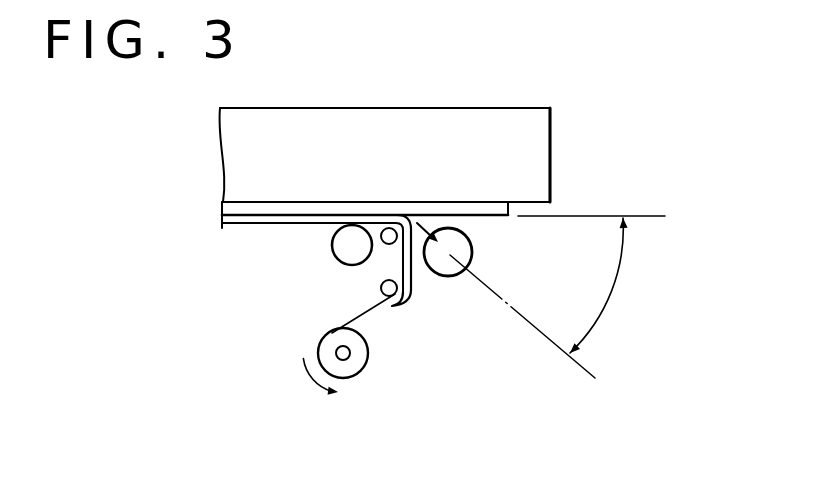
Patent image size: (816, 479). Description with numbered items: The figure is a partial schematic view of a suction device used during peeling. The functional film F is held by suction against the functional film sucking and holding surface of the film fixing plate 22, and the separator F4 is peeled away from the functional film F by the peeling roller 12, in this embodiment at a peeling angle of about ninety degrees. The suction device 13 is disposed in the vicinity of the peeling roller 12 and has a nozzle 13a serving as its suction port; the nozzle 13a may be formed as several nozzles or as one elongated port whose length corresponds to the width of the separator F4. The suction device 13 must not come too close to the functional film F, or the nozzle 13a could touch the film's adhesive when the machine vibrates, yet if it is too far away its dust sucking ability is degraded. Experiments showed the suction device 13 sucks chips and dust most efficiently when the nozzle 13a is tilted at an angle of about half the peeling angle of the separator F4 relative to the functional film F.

The film fixing plate 22 is at (515, 128).
The functional film F is at (236, 208).
The separator F4 is at (412, 296).
The peeling roller 12 is at (348, 250).
The suction device 13 is at (473, 253).
The nozzle 13a is at (441, 217).